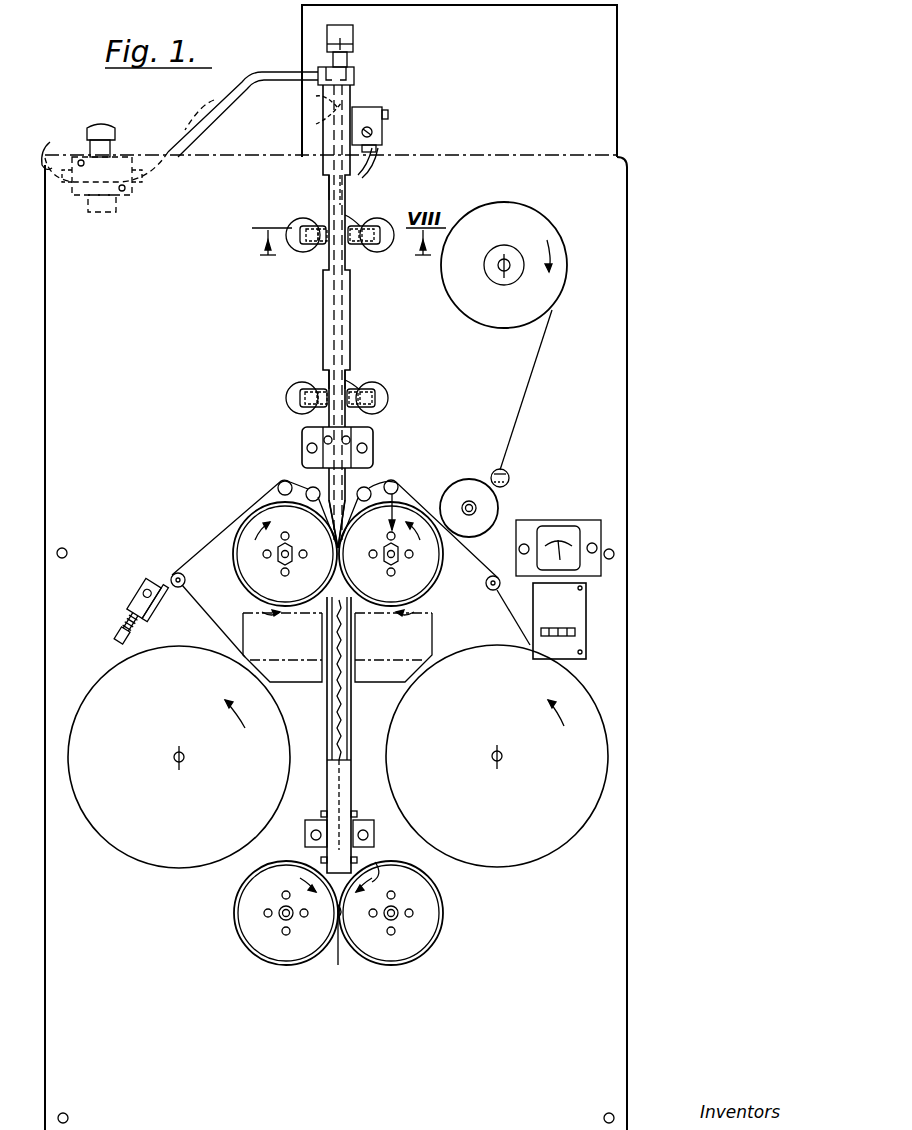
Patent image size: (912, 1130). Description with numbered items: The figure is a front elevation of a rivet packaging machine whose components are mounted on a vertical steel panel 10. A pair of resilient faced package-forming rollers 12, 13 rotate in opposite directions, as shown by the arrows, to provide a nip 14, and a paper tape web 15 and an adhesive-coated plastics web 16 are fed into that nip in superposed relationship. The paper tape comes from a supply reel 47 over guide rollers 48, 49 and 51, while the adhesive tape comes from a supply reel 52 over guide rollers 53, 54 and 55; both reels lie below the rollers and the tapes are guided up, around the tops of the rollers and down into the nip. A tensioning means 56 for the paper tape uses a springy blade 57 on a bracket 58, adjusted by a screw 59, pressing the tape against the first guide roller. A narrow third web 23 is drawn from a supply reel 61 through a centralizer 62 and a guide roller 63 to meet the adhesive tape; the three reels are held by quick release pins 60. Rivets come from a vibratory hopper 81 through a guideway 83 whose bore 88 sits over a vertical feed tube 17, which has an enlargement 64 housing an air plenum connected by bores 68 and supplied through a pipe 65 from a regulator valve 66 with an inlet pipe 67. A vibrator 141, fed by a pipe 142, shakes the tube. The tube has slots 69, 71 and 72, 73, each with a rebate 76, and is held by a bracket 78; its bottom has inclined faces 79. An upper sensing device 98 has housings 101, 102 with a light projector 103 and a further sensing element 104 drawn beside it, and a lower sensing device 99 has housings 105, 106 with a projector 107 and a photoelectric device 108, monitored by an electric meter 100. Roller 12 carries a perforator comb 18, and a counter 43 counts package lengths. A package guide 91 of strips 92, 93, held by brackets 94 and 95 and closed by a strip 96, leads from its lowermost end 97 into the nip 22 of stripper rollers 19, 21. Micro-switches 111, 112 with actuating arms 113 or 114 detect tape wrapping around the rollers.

The steel panel 10 is at (230, 175).
The package-forming roller 12 is at (425, 572).
The package-forming roller 13 is at (250, 580).
The nip 14 is at (342, 550).
The web 15 is at (232, 526).
The web 16 is at (478, 580).
The feed tube 17 is at (326, 318).
The perforator comb 18 is at (398, 486).
The stripper roller 19 is at (412, 952).
The stripper roller 21 is at (302, 956).
The nip 22 is at (340, 965).
The third web 23 is at (536, 386).
The electro-magnetic counter 43 is at (580, 640).
The supply reel 47 is at (106, 684).
The tape guide roller 48 is at (178, 573).
The tape guide roller 49 is at (278, 488).
The tape guide roller 51 is at (310, 487).
The supply reel 52 is at (567, 846).
The guide roller 53 is at (490, 590).
The guide roller 54 is at (398, 484).
The guide roller 55 is at (368, 488).
The tensioning means 56 is at (128, 608).
The springy blade 57 is at (178, 590).
The bracket 58 is at (134, 624).
The screw 59 is at (130, 578).
The quick release pin 60 is at (506, 262).
The supply reel 61 is at (550, 240).
The centralizer 62 is at (510, 478).
The guide roller 63 is at (354, 70).
The enlargement 64 is at (354, 80).
The pipe 65 is at (300, 72).
The air flow regulator valve 66 is at (128, 156).
The inlet pipe 67 is at (50, 145).
The bores 68 is at (316, 100).
The slot 69 is at (350, 195).
The slot 71 is at (327, 198).
The slot 72 is at (350, 380).
The slot 73 is at (330, 380).
The rebate 76 is at (346, 214).
The bracket 78 is at (372, 456).
The inclined faces 79 is at (336, 520).
The vibratory hopper 81 is at (492, 84).
The guideway 83 is at (354, 28).
The bore 88 is at (354, 44).
The package guide 91 is at (344, 758).
The strip 92 is at (348, 724).
The strip 93 is at (328, 758).
The bracket 94 is at (366, 820).
The bracket 95 is at (314, 820).
The transparent plastics strip 96 is at (342, 792).
The lowermost end 97 is at (358, 892).
The upper sensing device 98 is at (268, 255).
The lower rivet sensing device 99 is at (268, 410).
The electric meter 100 is at (565, 526).
The housing 101 is at (372, 232).
The housing 102 is at (308, 226).
The light projector 103 is at (303, 250).
The roller 104 is at (358, 246).
The housing 105 is at (388, 396).
The housing 106 is at (288, 394).
The light projector 107 is at (305, 408).
The photoelectric device 108 is at (380, 408).
The micro-switch 111 is at (424, 642).
The micro-switch 112 is at (258, 626).
The actuating arm 113 is at (414, 612).
The actuating arm 114 is at (262, 612).
The pneumatically-operated vibrator 141 is at (382, 138).
The pipe 142 is at (196, 116).